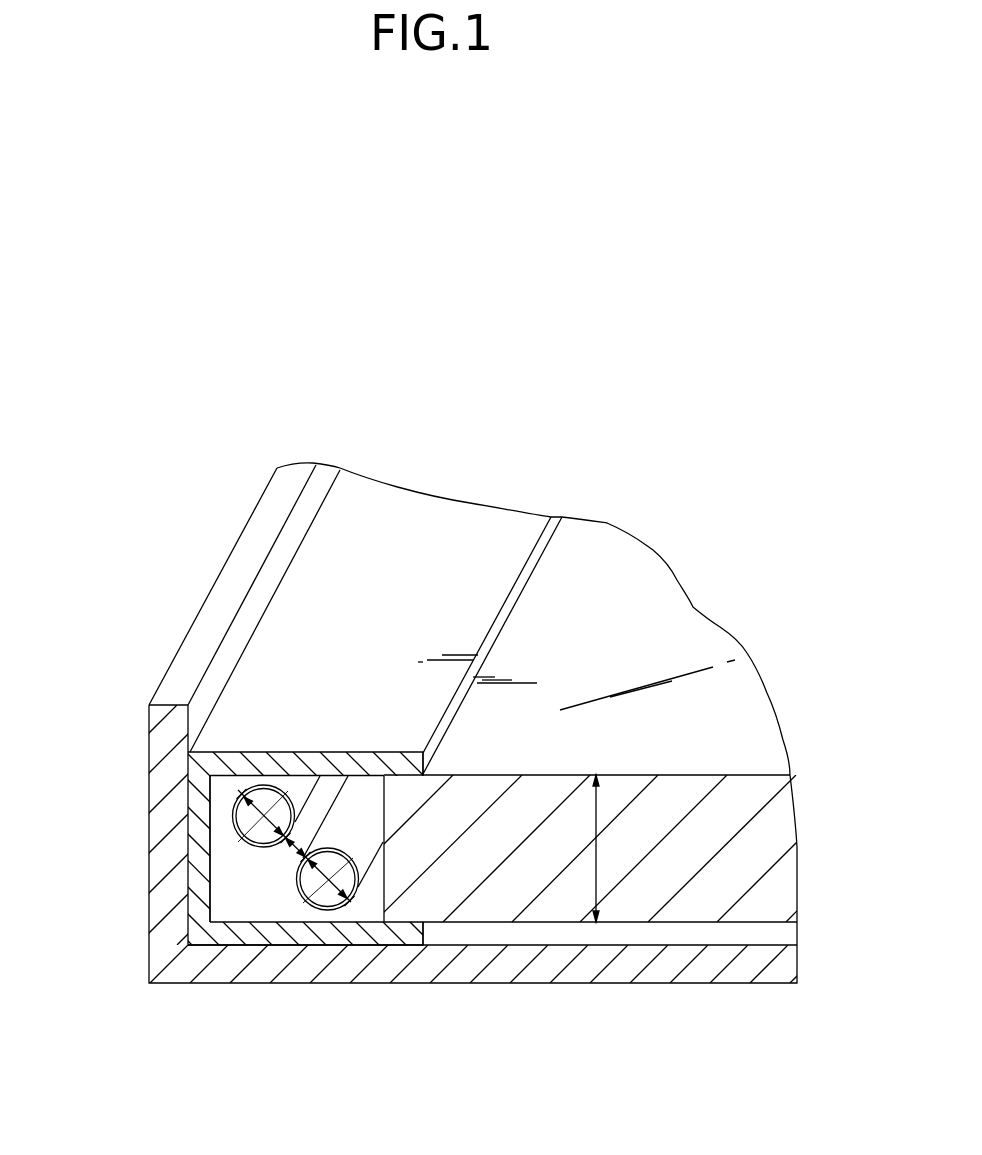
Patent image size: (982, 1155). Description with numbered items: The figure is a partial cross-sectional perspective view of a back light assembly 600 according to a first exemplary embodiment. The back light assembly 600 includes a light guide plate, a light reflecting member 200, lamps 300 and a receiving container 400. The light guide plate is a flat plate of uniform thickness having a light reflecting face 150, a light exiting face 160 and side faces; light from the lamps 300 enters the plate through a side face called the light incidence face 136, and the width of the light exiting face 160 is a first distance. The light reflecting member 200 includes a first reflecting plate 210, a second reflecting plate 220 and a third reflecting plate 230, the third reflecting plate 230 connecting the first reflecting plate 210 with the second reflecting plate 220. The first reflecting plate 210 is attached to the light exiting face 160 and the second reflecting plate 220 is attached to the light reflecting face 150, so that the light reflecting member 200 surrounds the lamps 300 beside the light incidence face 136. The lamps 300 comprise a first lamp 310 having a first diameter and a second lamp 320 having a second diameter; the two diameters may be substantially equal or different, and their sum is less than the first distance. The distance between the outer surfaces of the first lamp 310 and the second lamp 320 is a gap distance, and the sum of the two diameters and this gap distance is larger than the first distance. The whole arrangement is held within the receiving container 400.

The back light assembly 600 is at (747, 592).
The light exiting face 160 is at (747, 775).
The light incidence face 136 is at (378, 858).
The light reflecting face 150 is at (690, 922).
The receiving container 400 is at (593, 968).
The light reflecting member 200 is at (296, 845).
The first reflecting plate 210 is at (247, 753).
The third reflecting plate 230 is at (200, 854).
The second reflecting plate 220 is at (223, 943).
The lamps 300 is at (300, 939).
The first lamp 310 is at (267, 847).
The second lamp 320 is at (333, 903).